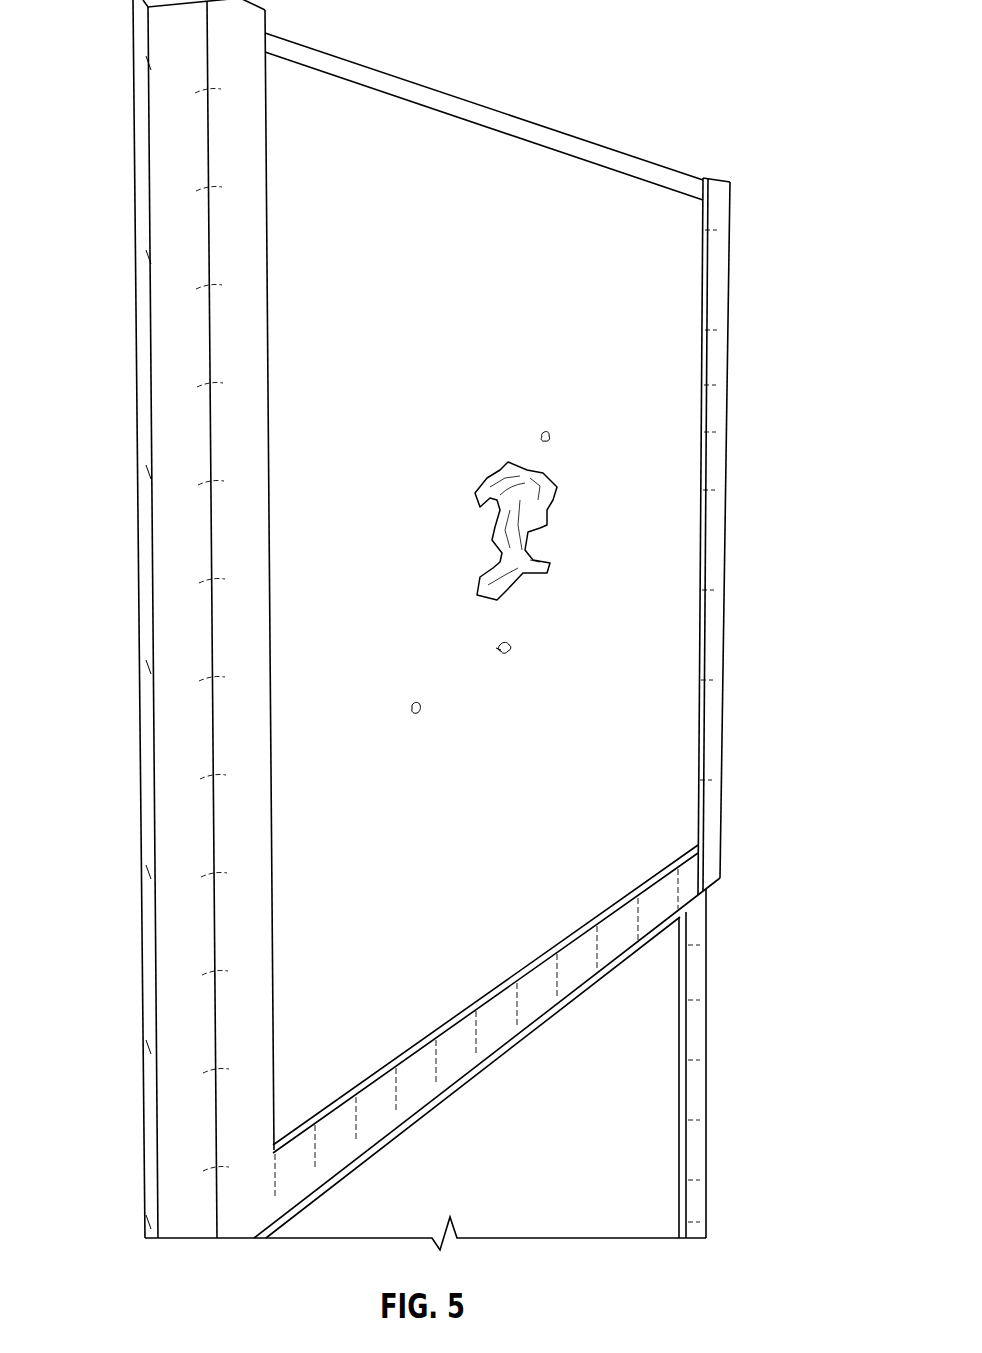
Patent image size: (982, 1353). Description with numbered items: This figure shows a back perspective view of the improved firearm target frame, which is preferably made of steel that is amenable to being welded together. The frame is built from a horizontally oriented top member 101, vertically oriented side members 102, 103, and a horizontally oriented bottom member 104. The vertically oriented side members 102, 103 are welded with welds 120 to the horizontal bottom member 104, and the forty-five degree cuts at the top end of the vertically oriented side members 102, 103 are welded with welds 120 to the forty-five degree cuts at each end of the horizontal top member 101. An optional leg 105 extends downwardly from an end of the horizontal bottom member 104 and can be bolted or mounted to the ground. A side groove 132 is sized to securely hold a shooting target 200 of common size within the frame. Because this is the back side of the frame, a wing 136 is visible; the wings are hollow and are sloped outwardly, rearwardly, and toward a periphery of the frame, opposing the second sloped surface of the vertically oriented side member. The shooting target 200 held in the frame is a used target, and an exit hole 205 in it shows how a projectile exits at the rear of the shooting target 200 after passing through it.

The top member 101 is at (570, 138).
The side member 102 is at (728, 443).
The side member 103 is at (150, 356).
The bottom member 104 is at (688, 876).
The leg 105 is at (696, 957).
The weld 120 is at (148, 49).
The side groove 132 is at (705, 172).
The wing 136 is at (146, 146).
The shooting target 200 is at (668, 349).
The exit hole 205 is at (537, 505).